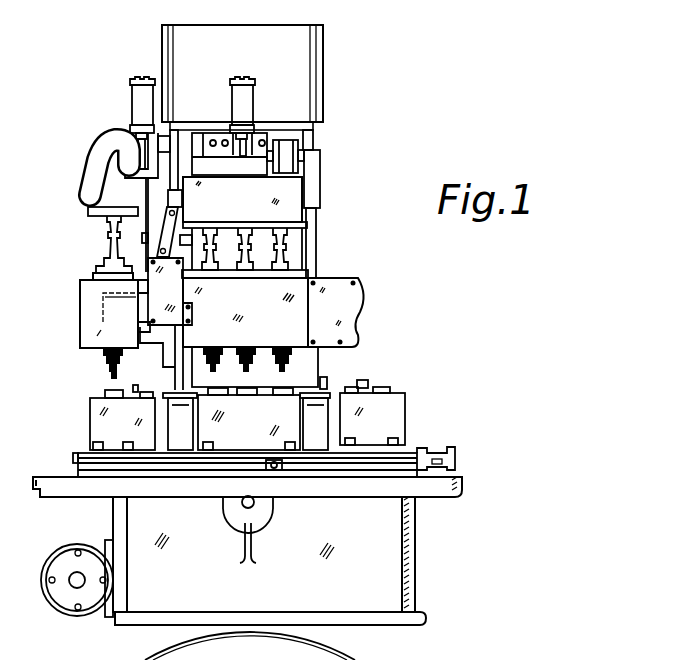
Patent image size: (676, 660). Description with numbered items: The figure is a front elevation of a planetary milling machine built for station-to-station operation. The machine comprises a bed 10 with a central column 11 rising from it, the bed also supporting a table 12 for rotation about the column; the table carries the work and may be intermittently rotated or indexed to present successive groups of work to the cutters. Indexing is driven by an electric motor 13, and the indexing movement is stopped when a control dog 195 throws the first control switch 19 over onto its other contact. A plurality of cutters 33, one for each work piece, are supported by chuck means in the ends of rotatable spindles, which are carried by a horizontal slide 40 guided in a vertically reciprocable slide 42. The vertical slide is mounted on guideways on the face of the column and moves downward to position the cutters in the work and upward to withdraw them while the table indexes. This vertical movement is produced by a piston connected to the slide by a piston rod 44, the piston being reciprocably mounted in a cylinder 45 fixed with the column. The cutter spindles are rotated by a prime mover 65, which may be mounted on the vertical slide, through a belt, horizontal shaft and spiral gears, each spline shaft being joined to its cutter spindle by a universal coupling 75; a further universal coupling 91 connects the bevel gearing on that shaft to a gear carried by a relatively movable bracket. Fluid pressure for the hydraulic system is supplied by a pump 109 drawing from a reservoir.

The pump 109 is at (324, 93).
The central column 11 is at (316, 128).
The cylinder 45 is at (140, 96).
The piston rod 44 is at (134, 142).
The prime mover 65 is at (295, 110).
The universal coupling 91 is at (160, 222).
The vertically reciprocable slide 42 is at (146, 240).
The universal coupling 75 is at (106, 244).
The horizontal slide 40 is at (88, 336).
The cutters 33 is at (108, 371).
The table 12 is at (405, 450).
The first control switch 19 is at (452, 447).
The bed 10 is at (415, 532).
The electric motor 13 is at (60, 556).
The control dog 195 is at (227, 656).